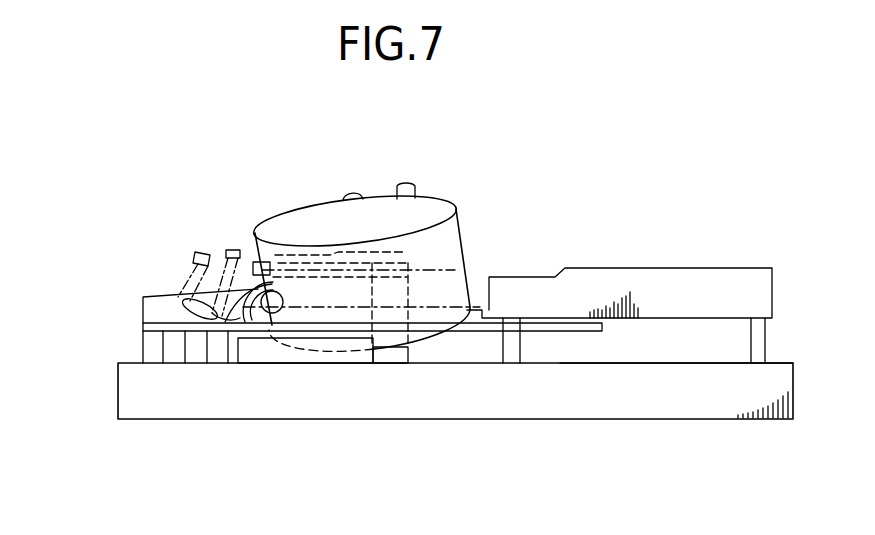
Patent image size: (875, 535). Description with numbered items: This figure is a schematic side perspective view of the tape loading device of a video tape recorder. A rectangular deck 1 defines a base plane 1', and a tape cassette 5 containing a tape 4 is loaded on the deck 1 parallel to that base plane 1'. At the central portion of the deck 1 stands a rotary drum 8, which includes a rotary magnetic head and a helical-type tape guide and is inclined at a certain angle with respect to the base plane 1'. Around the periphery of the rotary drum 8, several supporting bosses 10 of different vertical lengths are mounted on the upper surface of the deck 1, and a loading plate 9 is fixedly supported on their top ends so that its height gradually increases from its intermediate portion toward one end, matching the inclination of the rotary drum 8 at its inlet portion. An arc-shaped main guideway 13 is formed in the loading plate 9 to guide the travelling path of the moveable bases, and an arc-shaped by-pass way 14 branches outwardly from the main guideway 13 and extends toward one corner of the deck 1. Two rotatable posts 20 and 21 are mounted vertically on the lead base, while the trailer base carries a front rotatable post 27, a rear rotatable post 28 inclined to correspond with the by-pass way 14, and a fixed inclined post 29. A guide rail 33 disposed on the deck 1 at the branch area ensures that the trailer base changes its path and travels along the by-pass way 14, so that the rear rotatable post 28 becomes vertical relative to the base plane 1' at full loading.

The deck 1 is at (485, 311).
The base plane 1' is at (676, 283).
The tape 4 is at (467, 262).
The tape cassette 5 is at (648, 268).
The rotary drum 8 is at (462, 233).
The loading plate 9 is at (548, 330).
The supporting bosses 10 is at (135, 345).
The main guideway 13 is at (237, 312).
The by-pass way 14 is at (140, 300).
The rotatable post 20 is at (404, 183).
The rotatable post 21 is at (347, 193).
The front rotatable post 27 is at (197, 252).
The rear rotatable post 28 is at (265, 262).
The inclined post 29 is at (224, 250).
The guide rail 33 is at (283, 352).